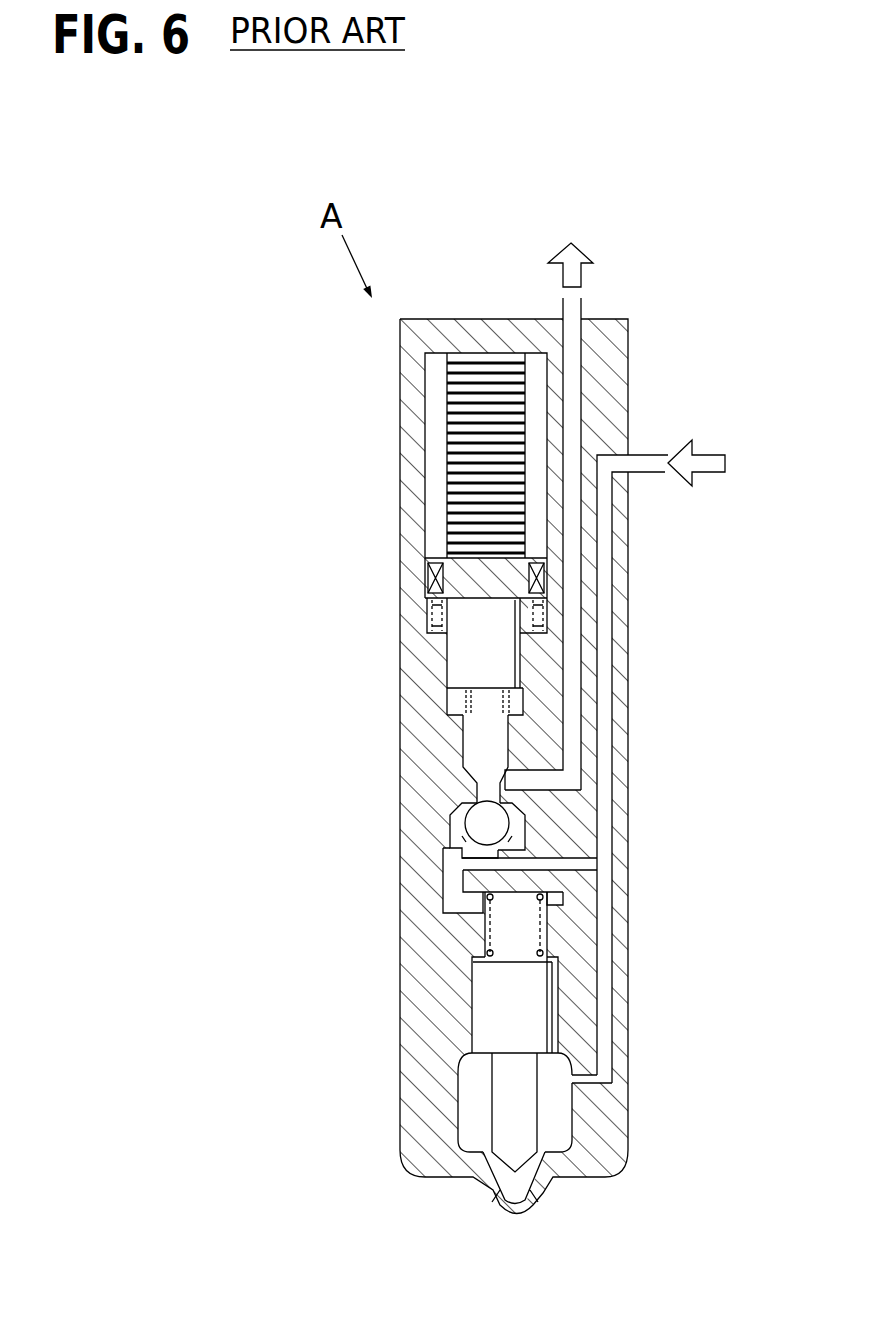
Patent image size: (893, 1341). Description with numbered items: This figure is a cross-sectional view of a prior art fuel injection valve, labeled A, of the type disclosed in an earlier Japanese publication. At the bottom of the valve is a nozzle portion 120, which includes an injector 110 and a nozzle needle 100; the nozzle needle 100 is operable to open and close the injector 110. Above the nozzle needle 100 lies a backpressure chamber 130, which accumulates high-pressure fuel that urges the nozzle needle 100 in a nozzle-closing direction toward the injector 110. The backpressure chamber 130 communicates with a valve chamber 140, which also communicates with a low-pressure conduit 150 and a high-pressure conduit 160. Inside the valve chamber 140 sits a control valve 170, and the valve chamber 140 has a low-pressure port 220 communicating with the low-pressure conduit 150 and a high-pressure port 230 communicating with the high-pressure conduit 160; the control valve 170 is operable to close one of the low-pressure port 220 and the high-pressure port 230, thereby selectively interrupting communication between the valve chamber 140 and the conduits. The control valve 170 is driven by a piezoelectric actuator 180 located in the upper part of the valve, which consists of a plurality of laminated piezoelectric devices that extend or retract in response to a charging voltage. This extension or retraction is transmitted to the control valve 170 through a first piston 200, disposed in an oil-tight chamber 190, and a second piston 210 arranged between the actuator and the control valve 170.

The nozzle needle 100 is at (500, 1093).
The injector 110 is at (490, 1192).
The nozzle portion 120 is at (662, 1207).
The backpressure chamber 130 is at (523, 935).
The valve chamber 140 is at (518, 829).
The low-pressure conduit 150 is at (573, 697).
The high-pressure conduit 160 is at (602, 648).
The control valve 170 is at (473, 822).
The piezoelectric actuator 180 is at (440, 440).
The oil-tight chamber 190 is at (447, 698).
The first piston 200 is at (462, 652).
The second piston 210 is at (473, 740).
The low-pressure port 220 is at (517, 800).
The high-pressure port 230 is at (488, 848).